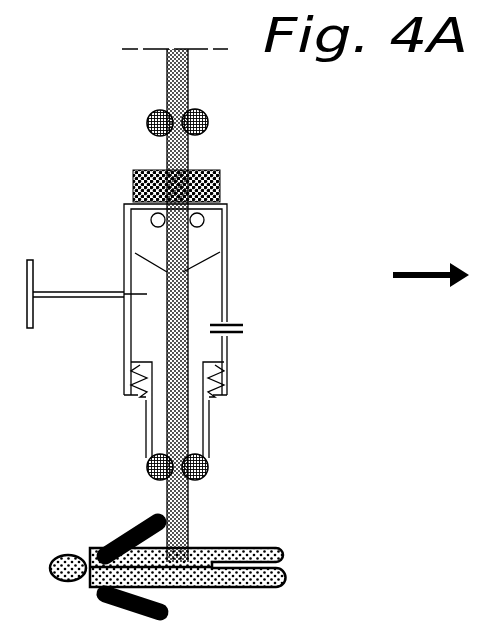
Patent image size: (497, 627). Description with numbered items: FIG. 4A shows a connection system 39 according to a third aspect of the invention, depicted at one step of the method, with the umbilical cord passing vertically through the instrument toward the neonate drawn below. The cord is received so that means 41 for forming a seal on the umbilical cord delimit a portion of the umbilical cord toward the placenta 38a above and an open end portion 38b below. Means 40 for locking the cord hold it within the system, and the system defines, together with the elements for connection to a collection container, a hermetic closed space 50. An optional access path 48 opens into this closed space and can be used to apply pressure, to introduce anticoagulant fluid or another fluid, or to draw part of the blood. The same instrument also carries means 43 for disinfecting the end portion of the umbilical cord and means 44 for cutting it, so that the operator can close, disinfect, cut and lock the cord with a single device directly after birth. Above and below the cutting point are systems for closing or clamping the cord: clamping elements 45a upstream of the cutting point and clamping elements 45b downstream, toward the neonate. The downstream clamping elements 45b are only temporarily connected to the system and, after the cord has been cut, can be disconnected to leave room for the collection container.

The portion of the umbilical cord toward the placenta 38a is at (167, 80).
The open end portion 38b is at (170, 232).
The connection system 39 is at (123, 213).
The means for locking the cord 40 is at (206, 259).
The means for forming a seal on the umbilical cord 41 is at (205, 222).
The means for disinfecting the end portion of the umbilical cord 43 is at (220, 173).
The means for cutting the umbilical cord 44 is at (35, 310).
The clamping system upstream of the cutting point 45a is at (205, 113).
The clamping system downstream of the cutting point 45b is at (208, 468).
The access path 48 is at (247, 330).
The hermetic closed space 50 is at (150, 335).